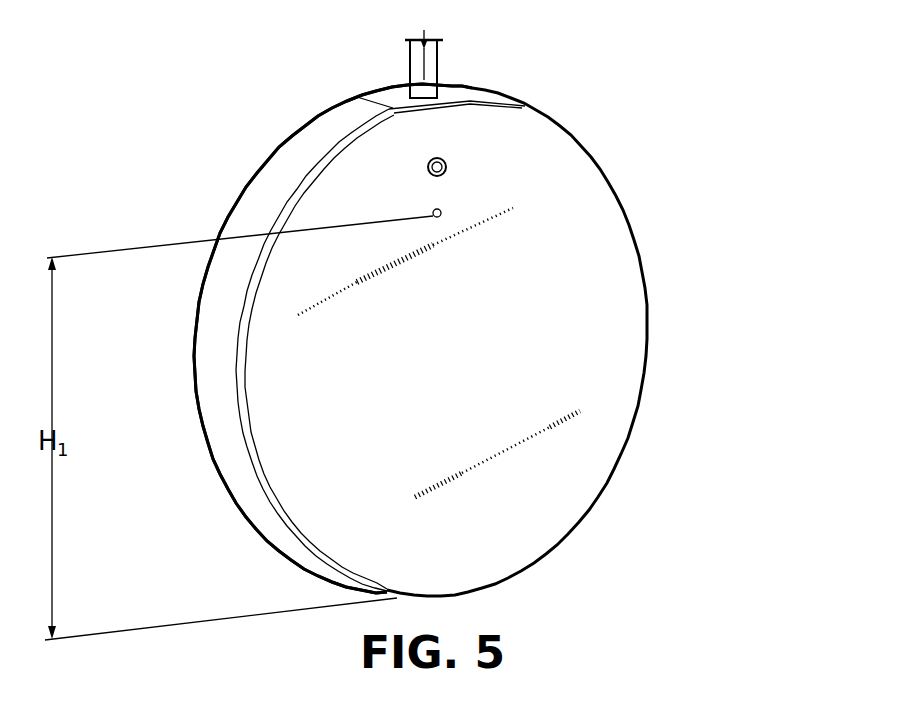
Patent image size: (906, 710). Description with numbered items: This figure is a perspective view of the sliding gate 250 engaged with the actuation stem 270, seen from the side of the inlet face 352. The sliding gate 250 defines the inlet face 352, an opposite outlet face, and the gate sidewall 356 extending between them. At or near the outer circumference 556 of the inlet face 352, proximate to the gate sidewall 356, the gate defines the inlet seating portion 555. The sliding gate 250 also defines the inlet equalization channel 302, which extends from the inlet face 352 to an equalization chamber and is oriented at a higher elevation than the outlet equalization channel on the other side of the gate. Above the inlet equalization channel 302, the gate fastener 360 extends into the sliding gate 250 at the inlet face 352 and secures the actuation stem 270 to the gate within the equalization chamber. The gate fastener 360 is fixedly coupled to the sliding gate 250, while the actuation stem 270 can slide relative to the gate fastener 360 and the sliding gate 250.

The sliding gate 250 is at (292, 338).
The actuation stem 270 is at (491, 60).
The inlet equalization channel 302 is at (443, 212).
The inlet face 352 is at (532, 342).
The gate sidewall 356 is at (276, 338).
The gate fastener 360 is at (561, 130).
The inlet seating portion 555 is at (329, 346).
The outer circumference 556 is at (307, 346).